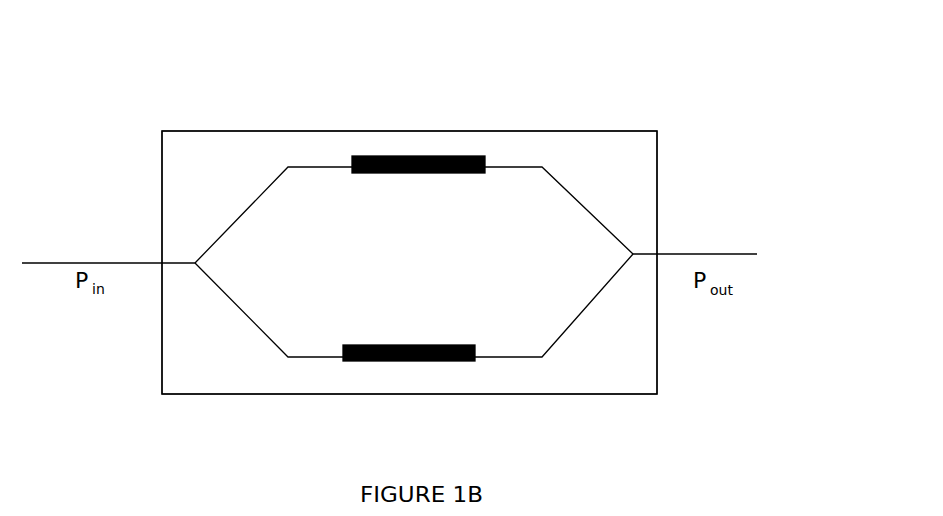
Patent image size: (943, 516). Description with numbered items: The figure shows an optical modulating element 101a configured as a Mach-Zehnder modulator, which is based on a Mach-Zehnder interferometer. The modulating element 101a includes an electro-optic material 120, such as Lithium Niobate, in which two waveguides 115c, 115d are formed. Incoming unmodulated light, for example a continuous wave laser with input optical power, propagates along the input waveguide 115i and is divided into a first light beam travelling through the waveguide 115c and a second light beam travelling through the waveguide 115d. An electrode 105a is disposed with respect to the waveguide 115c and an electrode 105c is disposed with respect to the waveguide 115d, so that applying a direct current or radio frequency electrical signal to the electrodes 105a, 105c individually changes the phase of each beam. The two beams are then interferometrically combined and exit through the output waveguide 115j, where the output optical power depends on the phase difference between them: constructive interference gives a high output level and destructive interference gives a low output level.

The modulating element 101a is at (285, 65).
The electro-optic material 120 is at (642, 131).
The input waveguide 115i is at (97, 263).
The output waveguide 115j is at (715, 254).
The waveguide 115c is at (268, 190).
The waveguide 115d is at (255, 322).
The electrode 105a is at (395, 172).
The electrode 105c is at (408, 362).